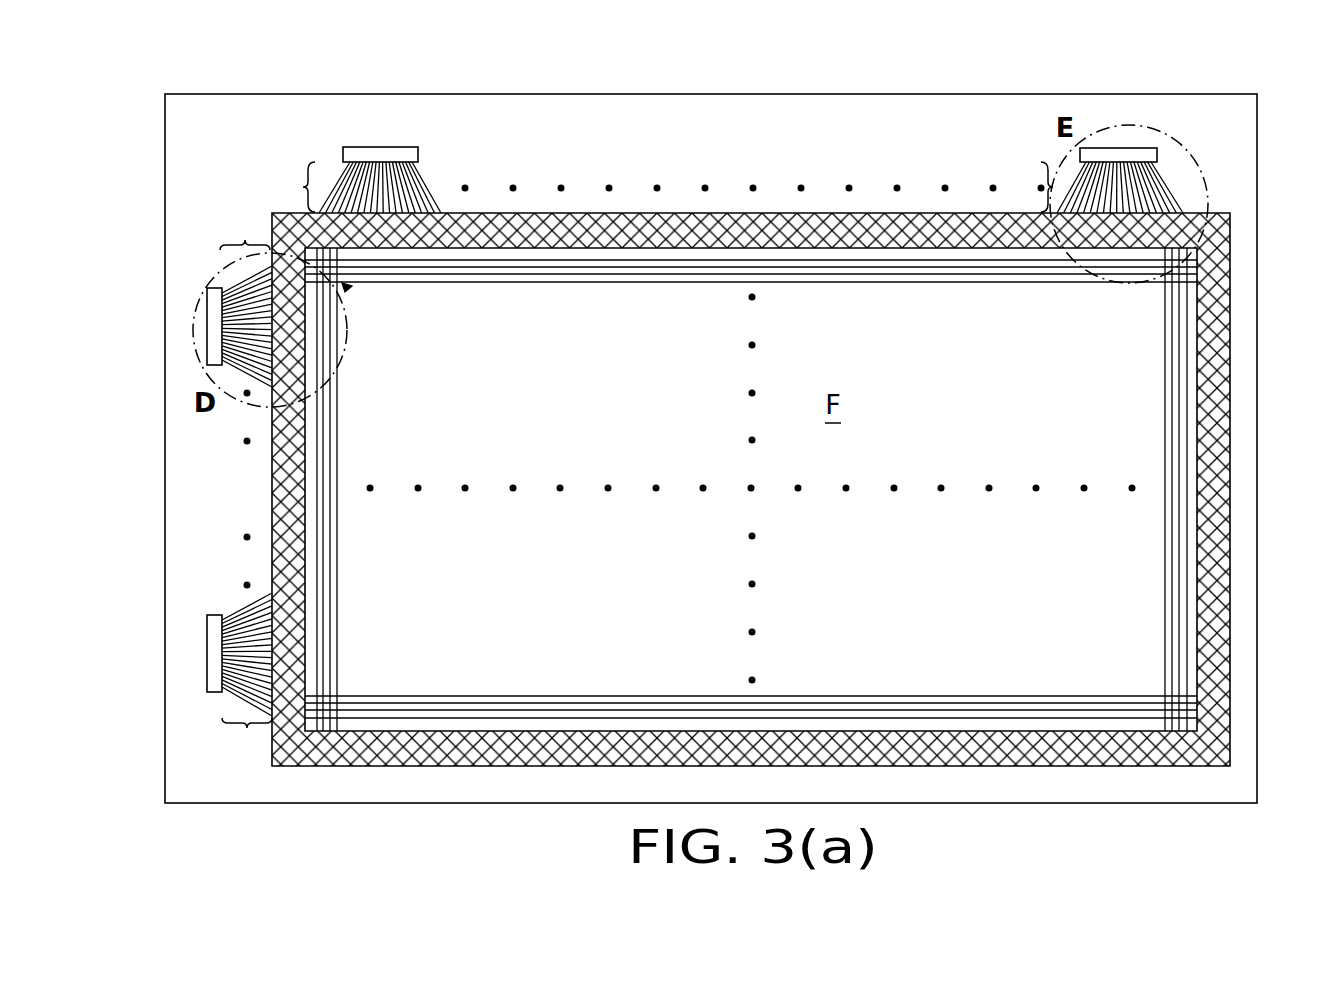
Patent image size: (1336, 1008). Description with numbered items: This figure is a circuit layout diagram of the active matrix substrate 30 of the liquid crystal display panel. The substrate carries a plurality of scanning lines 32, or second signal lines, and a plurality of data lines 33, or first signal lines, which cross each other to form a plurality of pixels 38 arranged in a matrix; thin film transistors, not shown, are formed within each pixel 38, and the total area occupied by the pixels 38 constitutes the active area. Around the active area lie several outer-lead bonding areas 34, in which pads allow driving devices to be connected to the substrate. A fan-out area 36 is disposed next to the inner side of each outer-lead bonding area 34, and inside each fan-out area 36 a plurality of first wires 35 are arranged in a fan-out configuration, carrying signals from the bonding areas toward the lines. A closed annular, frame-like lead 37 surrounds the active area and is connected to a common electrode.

The active matrix substrate 30 is at (698, 85).
The scanning lines 32 is at (857, 260).
The data lines 33 is at (320, 452).
The outer-lead bonding areas 34 is at (381, 147).
The first wires 35 is at (430, 182).
The fan-out area 36 is at (636, 460).
The frame-like lead 37 is at (1218, 413).
The pixels 38 is at (347, 288).